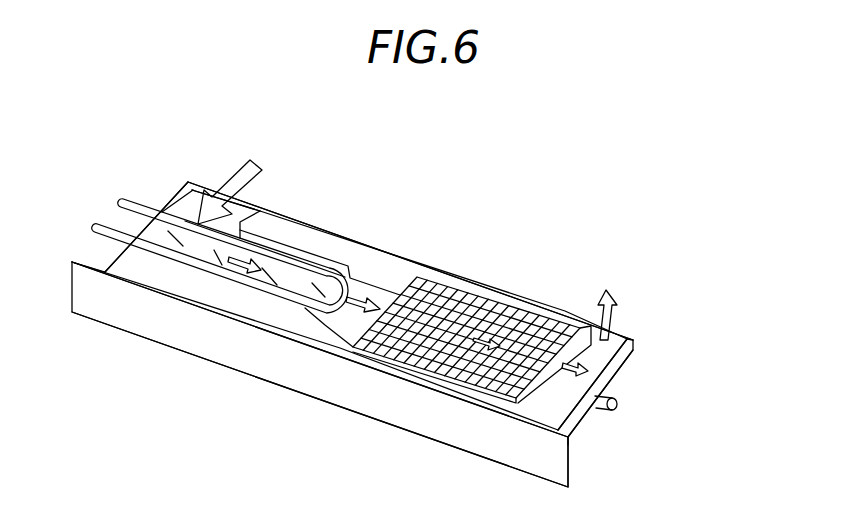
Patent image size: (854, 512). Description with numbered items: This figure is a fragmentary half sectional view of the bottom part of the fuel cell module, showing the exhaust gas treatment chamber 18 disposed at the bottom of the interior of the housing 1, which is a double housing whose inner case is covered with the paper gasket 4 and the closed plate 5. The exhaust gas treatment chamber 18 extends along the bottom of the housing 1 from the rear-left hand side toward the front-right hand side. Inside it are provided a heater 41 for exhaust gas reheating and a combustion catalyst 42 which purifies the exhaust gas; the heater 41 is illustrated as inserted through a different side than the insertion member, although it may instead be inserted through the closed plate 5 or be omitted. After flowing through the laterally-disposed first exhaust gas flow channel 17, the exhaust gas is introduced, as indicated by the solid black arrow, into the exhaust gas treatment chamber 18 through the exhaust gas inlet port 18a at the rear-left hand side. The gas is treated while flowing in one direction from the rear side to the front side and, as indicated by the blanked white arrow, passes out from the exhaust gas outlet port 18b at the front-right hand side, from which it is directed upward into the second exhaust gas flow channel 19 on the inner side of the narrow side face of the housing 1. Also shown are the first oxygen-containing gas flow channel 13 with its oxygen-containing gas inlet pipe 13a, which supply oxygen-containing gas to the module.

The housing 1 is at (531, 300).
The paper gasket 4 is at (571, 448).
The closed plate 5 is at (571, 470).
The first oxygen-containing gas flow channel 13 is at (636, 364).
The oxygen-containing gas inlet pipe 13a is at (617, 397).
The first exhaust gas flow channel 17 is at (244, 177).
The exhaust gas treatment chamber 18 is at (350, 220).
The exhaust gas inlet port 18a is at (204, 178).
The exhaust gas outlet port 18b is at (634, 326).
The second exhaust gas flow channel 19 is at (610, 295).
The heater 41 is at (130, 200).
The combustion catalyst 42 is at (504, 298).